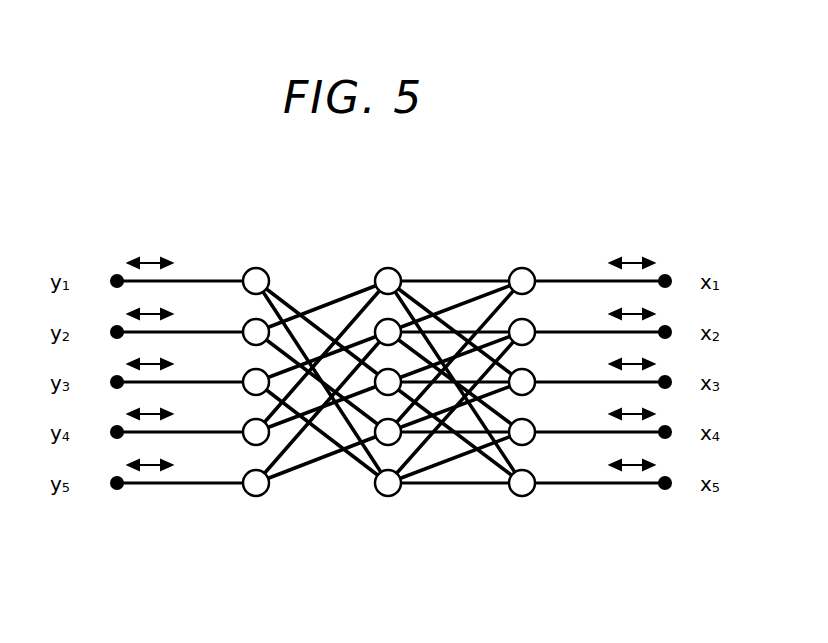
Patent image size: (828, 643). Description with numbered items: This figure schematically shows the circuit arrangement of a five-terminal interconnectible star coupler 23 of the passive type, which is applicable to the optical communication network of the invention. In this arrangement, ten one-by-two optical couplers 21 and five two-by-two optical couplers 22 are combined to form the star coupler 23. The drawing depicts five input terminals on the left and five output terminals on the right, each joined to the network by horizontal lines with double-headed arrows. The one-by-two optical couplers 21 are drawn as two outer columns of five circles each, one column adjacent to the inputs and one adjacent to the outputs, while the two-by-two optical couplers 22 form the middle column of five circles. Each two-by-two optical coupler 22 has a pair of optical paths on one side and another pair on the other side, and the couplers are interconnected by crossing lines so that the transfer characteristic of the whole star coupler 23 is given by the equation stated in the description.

The 1×2 optical coupler 21 is at (246, 477).
The 2×2 optical coupler 22 is at (401, 479).
The star coupler 23 is at (327, 205).